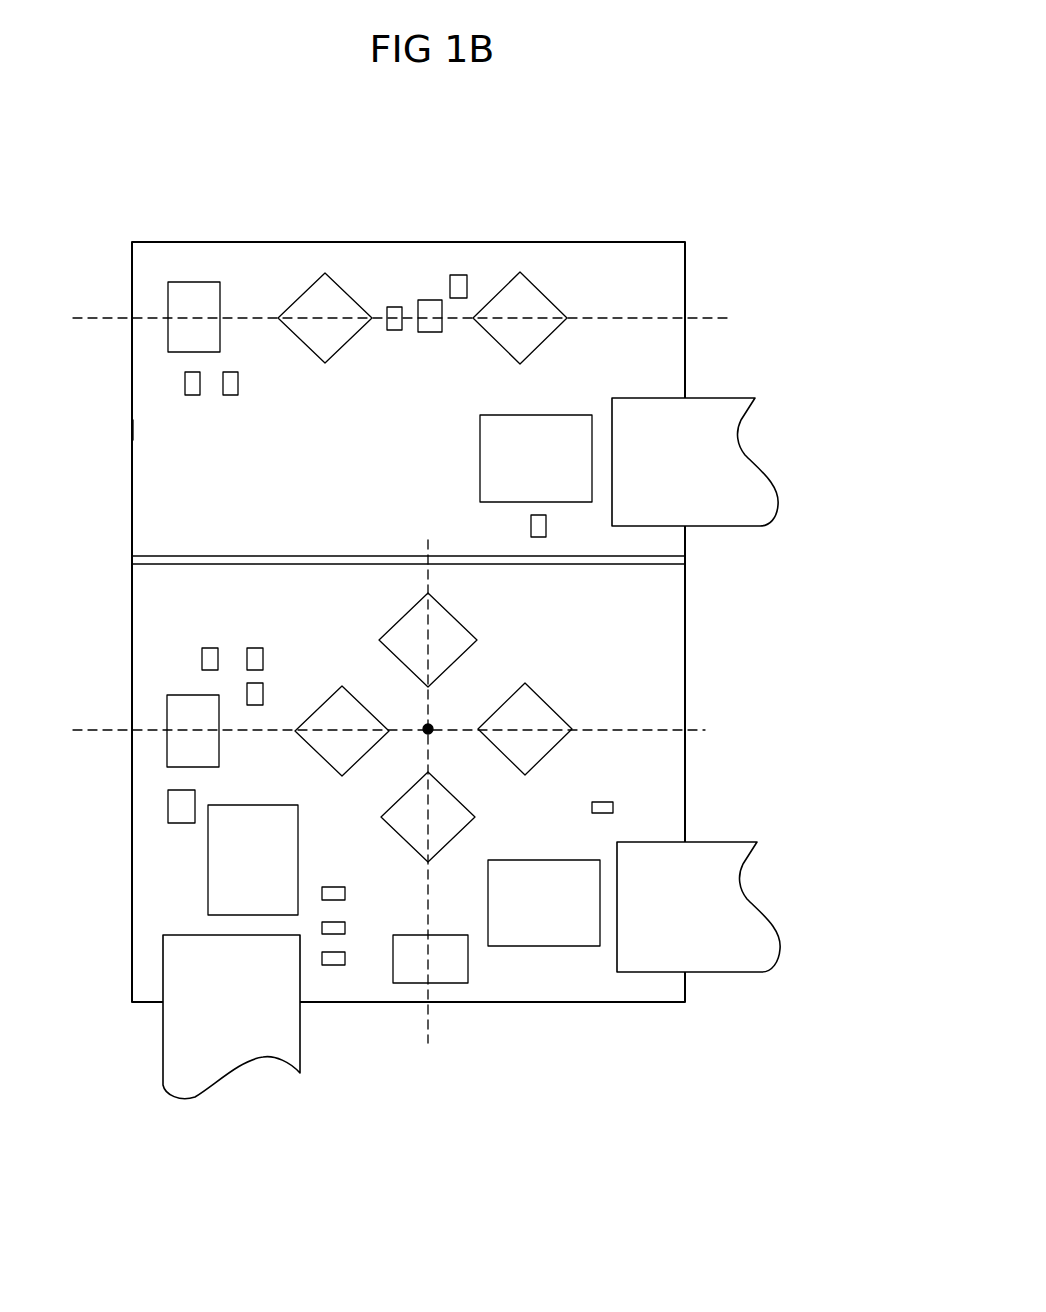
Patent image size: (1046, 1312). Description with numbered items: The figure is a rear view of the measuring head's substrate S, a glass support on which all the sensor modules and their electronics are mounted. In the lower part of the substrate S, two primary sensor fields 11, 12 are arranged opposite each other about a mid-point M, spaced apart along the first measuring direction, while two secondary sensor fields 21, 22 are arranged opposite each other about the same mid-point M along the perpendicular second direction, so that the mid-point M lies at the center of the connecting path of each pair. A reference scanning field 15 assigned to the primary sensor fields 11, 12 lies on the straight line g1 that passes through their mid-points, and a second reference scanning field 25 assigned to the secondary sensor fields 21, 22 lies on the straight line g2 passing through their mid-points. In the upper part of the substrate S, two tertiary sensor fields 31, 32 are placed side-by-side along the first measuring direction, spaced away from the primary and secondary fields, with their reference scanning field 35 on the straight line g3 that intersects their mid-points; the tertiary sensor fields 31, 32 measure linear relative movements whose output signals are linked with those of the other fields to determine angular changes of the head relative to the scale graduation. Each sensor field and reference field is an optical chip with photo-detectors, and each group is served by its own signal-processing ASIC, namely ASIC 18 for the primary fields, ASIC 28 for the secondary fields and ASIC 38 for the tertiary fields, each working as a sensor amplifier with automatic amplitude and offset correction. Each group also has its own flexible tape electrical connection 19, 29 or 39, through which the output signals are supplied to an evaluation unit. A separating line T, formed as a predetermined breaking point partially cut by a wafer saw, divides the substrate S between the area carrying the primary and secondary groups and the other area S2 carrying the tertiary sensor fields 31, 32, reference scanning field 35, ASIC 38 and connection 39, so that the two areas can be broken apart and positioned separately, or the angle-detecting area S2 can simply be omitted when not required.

The primary sensor field 11 is at (547, 725).
The primary sensor field 12 is at (338, 707).
The reference scanning field 15 is at (180, 730).
The ASIC 18 is at (235, 872).
The electrical connection 19 is at (208, 1057).
The secondary sensor field 21 is at (442, 633).
The secondary sensor field 22 is at (407, 813).
The reference scanning field 25 is at (445, 965).
The ASIC 28 is at (553, 930).
The electrical connection 29 is at (733, 930).
The tertiary sensor field 31 is at (523, 307).
The tertiary sensor field 32 is at (327, 305).
The reference scanning field 35 is at (187, 318).
The ASIC 38 is at (535, 433).
The electrical connection 39 is at (732, 485).
The mid-point M is at (432, 733).
The substrate S is at (663, 1030).
The area of the substrate S2 is at (173, 427).
The separating line T is at (172, 555).
The straight line (axis) g1 is at (412, 734).
The straight line (axis) g2 is at (434, 809).
The straight line (axis) g3 is at (419, 321).